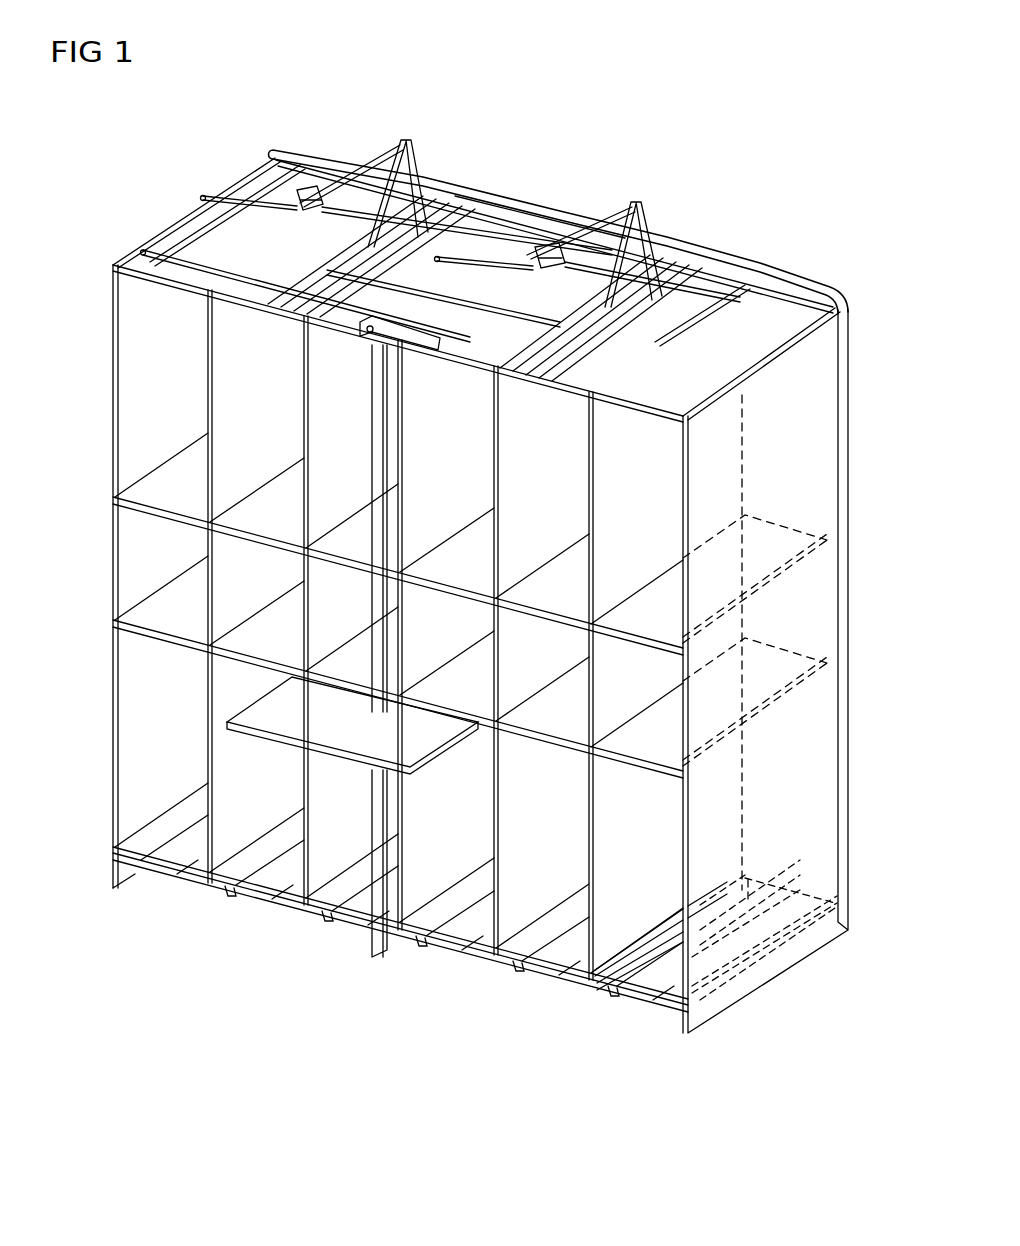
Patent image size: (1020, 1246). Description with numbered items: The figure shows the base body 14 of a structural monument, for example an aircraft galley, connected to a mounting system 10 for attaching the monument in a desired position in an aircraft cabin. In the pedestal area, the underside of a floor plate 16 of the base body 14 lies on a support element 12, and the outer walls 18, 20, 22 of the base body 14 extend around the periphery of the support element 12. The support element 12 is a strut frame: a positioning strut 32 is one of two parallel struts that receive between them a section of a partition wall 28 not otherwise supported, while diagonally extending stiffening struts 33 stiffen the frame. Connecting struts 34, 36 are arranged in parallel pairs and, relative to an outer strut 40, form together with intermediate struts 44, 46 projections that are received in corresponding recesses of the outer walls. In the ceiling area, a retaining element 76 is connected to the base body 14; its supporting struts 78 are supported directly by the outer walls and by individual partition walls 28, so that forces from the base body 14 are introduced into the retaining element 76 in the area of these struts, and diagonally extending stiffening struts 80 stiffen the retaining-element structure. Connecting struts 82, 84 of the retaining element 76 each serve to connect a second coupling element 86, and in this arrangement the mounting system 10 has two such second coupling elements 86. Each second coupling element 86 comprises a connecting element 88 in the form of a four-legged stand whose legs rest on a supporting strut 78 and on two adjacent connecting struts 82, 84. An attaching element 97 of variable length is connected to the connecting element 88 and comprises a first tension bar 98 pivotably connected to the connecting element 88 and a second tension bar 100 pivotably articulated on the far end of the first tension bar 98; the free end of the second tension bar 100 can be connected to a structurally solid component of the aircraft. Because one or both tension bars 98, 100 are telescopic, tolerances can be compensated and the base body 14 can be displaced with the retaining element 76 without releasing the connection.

The mounting system 10 is at (820, 265).
The support element 12 is at (742, 966).
The base body 14 is at (582, 203).
The floor plate 16 is at (372, 905).
The outer wall 18 is at (110, 347).
The outer wall 20 is at (533, 200).
The outer wall 22 is at (836, 438).
The partition walls 28 is at (218, 470).
The positioning strut 32 is at (645, 936).
The stiffening struts 33 is at (670, 940).
The connecting strut 34 is at (790, 885).
The connecting strut 36 is at (752, 880).
The outer strut 40 is at (800, 935).
The intermediate strut 44 is at (698, 1002).
The intermediate strut 46 is at (835, 912).
The retaining element 76 is at (275, 318).
The supporting struts 78 is at (165, 240).
The stiffening struts 80 is at (173, 250).
The connecting strut 82 is at (264, 298).
The connecting strut 84 is at (245, 280).
The second coupling element 86 is at (406, 140).
The connecting element 88 is at (414, 152).
The attaching element 97 is at (378, 144).
The first tension bar 98 is at (322, 186).
The second tension bar 100 is at (258, 193).